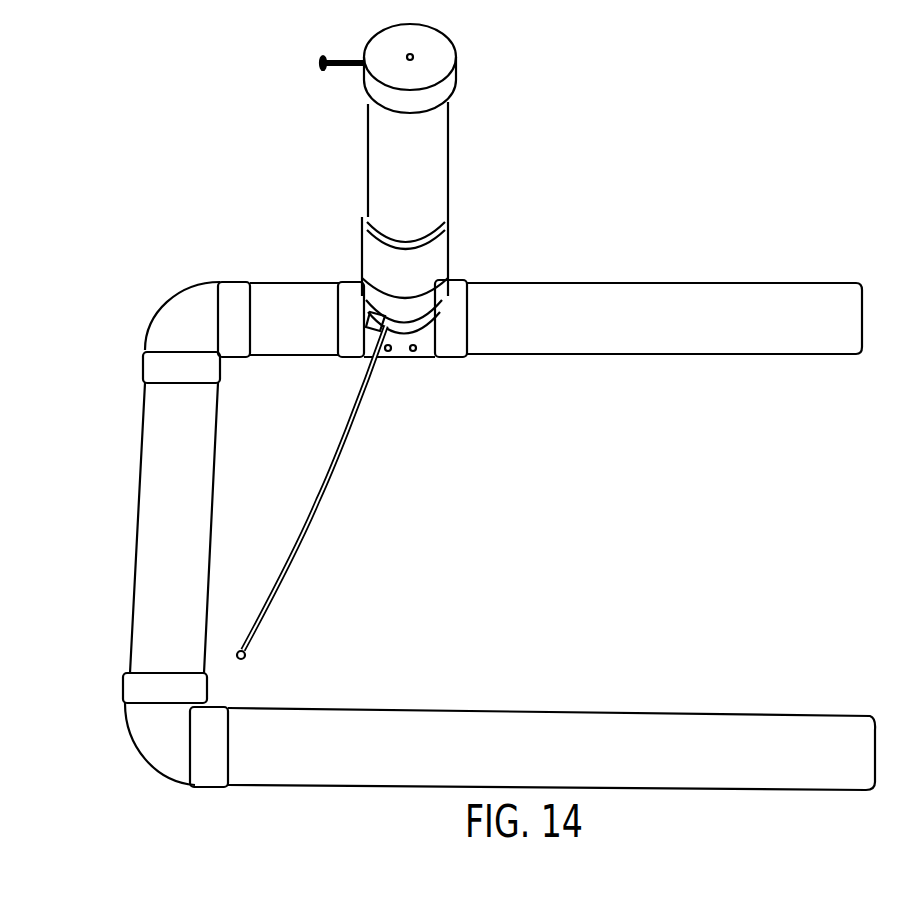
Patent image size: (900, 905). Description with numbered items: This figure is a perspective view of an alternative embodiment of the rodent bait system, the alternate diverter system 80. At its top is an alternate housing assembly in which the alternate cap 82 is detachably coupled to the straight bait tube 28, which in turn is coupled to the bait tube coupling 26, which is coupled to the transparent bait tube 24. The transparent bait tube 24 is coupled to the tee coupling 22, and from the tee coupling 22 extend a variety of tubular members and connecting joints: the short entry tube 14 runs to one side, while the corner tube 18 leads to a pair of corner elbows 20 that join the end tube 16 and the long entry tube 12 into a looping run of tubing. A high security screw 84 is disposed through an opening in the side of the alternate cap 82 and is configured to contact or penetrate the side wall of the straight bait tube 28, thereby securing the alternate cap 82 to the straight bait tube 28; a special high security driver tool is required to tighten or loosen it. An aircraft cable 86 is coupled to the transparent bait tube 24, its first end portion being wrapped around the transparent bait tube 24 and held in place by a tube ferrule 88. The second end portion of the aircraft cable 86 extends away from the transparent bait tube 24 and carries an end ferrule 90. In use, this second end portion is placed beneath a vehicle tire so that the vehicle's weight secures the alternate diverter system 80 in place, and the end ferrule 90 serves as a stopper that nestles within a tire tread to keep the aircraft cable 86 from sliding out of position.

The alternate diverter system 80 is at (186, 140).
The long entry tube 12 is at (772, 791).
The short entry tube 14 is at (742, 302).
The end tube 16 is at (156, 510).
The corner tube 18 is at (275, 300).
The corner elbows 20 is at (176, 312).
The tee coupling 22 is at (426, 346).
The transparent bait tube 24 is at (445, 290).
The bait tube coupling 26 is at (437, 256).
The straight bait tube 28 is at (438, 162).
The alternate cap 82 is at (447, 88).
The high security screw 84 is at (343, 62).
The aircraft cable 86 is at (330, 480).
The tube ferrule 88 is at (375, 322).
The end ferrule 90 is at (247, 655).